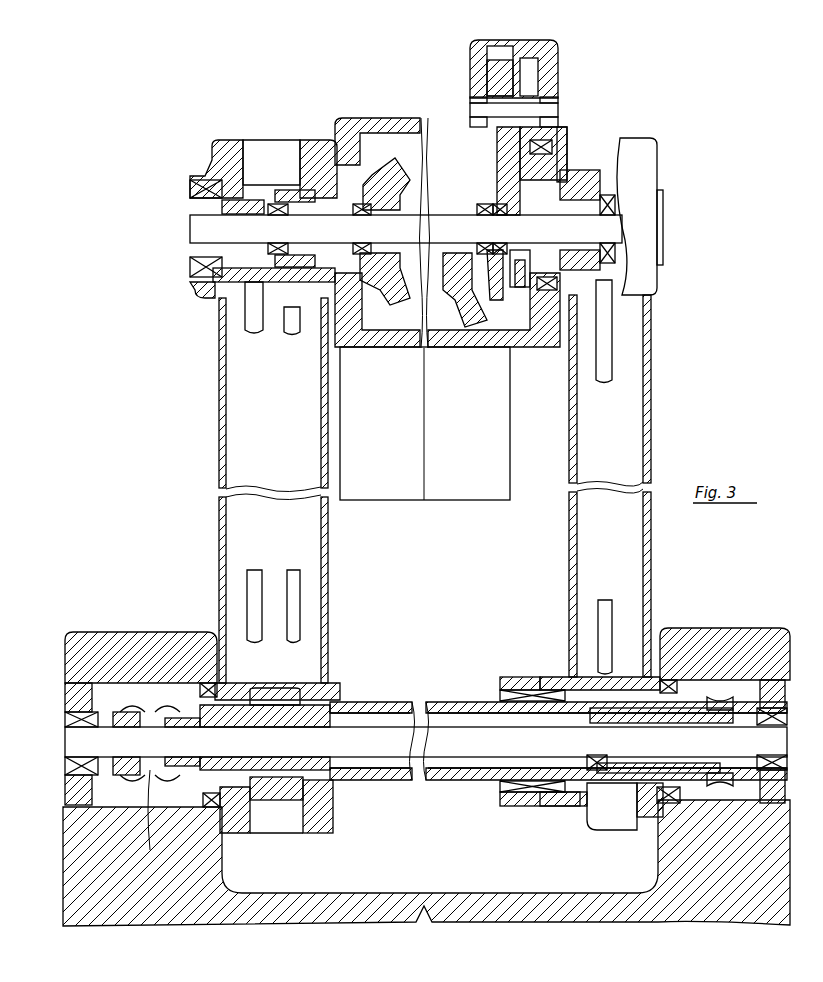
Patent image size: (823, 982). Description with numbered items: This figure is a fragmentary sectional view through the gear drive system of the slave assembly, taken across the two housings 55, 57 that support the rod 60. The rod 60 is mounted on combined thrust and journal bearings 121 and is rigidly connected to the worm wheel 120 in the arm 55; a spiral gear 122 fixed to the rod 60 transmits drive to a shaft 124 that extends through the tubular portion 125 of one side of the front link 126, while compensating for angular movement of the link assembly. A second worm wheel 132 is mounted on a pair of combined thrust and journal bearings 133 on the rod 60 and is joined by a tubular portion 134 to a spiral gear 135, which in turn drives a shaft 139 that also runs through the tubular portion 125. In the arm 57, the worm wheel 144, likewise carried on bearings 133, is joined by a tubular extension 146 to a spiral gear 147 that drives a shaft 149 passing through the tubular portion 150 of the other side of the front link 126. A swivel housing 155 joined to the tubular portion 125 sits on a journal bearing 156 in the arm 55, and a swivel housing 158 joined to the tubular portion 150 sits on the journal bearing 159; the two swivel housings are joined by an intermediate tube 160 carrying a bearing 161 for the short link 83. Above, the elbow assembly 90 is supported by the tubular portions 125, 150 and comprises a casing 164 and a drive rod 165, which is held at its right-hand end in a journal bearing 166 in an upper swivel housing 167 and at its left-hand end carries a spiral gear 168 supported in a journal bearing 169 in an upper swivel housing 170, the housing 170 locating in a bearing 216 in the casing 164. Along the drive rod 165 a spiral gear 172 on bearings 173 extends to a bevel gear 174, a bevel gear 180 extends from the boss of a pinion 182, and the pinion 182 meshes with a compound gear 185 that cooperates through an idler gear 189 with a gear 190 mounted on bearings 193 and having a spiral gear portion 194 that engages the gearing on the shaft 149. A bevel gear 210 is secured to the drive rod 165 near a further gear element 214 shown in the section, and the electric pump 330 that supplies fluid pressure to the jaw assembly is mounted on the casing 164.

The housing 55 is at (143, 640).
The housing 57 is at (768, 630).
The rod 60 is at (360, 762).
The short link 83 is at (515, 806).
The elbow assembly 90 is at (430, 88).
The worm wheel 120 is at (130, 778).
The combined thrust and journal bearings 121 is at (75, 716).
The spiral gear 122 is at (318, 760).
The shaft 124 is at (300, 336).
The tubular portion 125 is at (216, 352).
The front link 126 is at (195, 502).
The worm wheel 132 is at (150, 850).
The combined thrust and journal bearings 133 is at (258, 722).
The tubular portion 134 is at (212, 807).
The spiral gear 135 is at (276, 791).
The shaft 139 is at (245, 318).
The worm wheel 144 is at (712, 768).
The spacer 146 is at (692, 762).
The spiral gear 147 is at (625, 806).
The shaft 149 is at (606, 380).
The tubular portion 150 is at (652, 350).
The swivel housing 155 is at (325, 835).
The journal bearing 156 is at (250, 833).
The swivel housing 158 is at (565, 808).
The journal bearing 159 is at (682, 792).
The intermediate tube 160 is at (415, 780).
The bearing 161 is at (500, 790).
The casing 164 is at (392, 118).
The drive rod 165 is at (196, 226).
The journal bearing 166 is at (663, 208).
The upper swivel housing 167 is at (648, 170).
The spiral gear 168 is at (245, 275).
The journal bearing 169 is at (192, 268).
The upper swivel housing 170 is at (218, 140).
The spiral gear 172 is at (295, 228).
The bearings 173 is at (275, 212).
The bevel gear 174 is at (378, 172).
The bevel gear 180 is at (475, 327).
The pinion 182 is at (492, 300).
The compound gear 185 is at (498, 48).
The idler gear 189 is at (552, 135).
The gear 190 is at (520, 280).
The bearings 193 is at (615, 205).
The spiral gear portion 194 is at (596, 190).
The bevel gear 210 is at (428, 205).
The clutch element 214 is at (385, 289).
The bearing 216 is at (326, 140).
The electric pump 330 is at (352, 500).